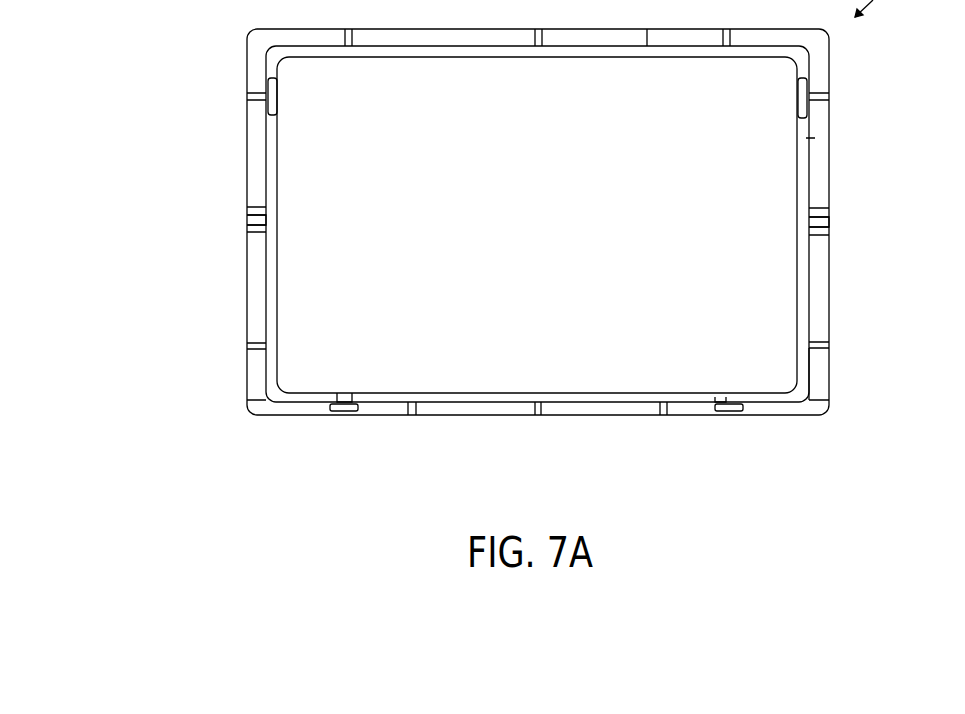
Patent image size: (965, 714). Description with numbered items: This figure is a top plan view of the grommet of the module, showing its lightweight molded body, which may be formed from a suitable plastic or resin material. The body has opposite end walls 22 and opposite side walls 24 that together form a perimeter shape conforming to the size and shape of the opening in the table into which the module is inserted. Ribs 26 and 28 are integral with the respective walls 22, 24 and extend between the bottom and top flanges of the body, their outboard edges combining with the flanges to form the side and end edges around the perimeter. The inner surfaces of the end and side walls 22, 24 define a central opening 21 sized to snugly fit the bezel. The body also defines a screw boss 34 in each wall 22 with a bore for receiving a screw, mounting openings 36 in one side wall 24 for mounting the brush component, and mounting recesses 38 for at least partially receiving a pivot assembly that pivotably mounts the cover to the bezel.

The central opening 21 is at (366, 392).
The end walls 22 is at (272, 187).
The side walls 24 is at (588, 52).
The ribs 26 is at (817, 352).
The ribs 28 is at (665, 403).
The screw boss 34 is at (253, 233).
The mounting openings 36 is at (345, 411).
The mounting recesses 38 is at (270, 105).